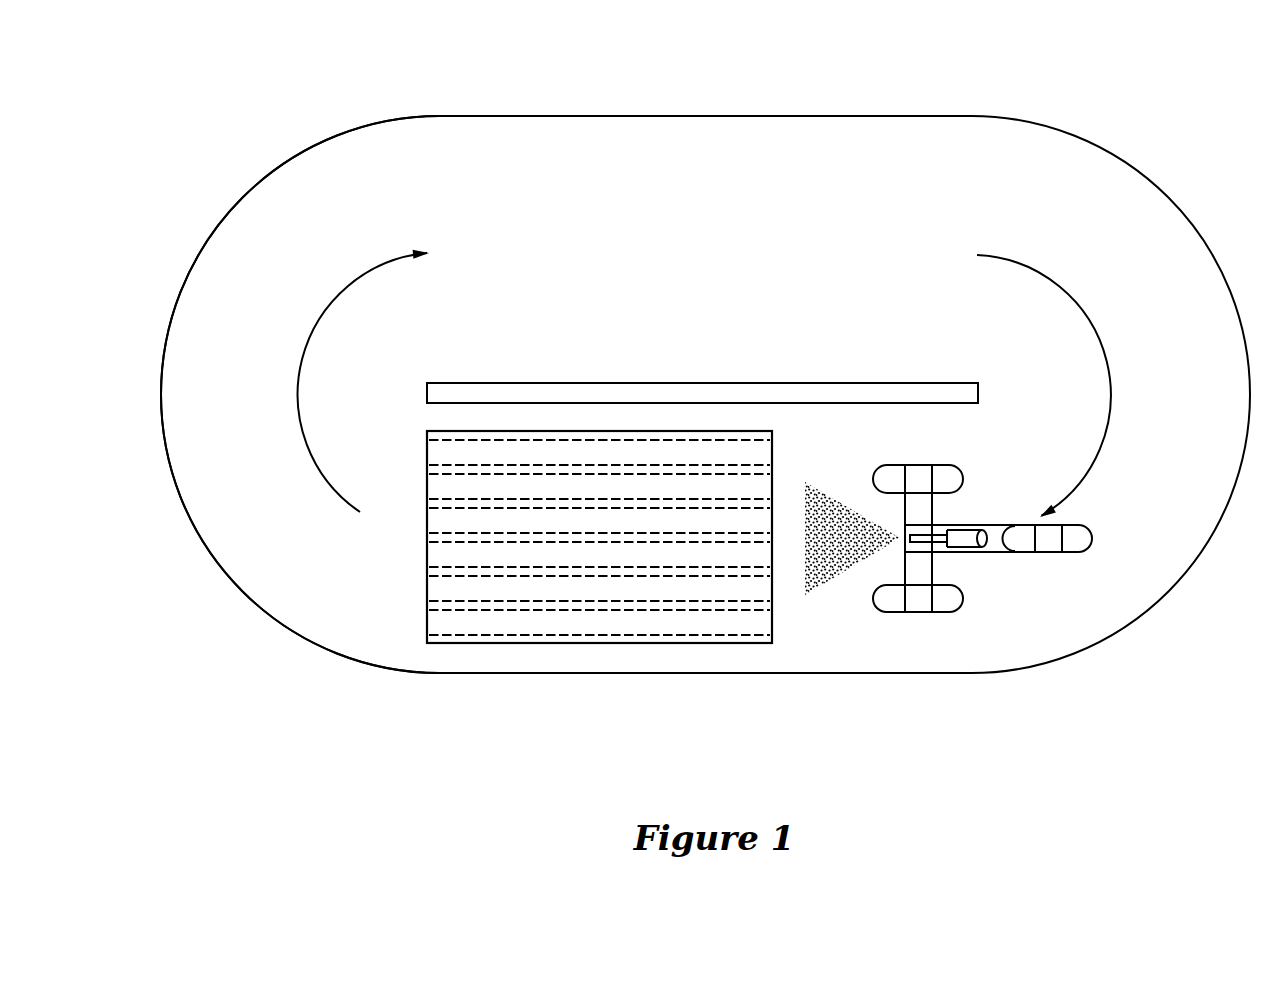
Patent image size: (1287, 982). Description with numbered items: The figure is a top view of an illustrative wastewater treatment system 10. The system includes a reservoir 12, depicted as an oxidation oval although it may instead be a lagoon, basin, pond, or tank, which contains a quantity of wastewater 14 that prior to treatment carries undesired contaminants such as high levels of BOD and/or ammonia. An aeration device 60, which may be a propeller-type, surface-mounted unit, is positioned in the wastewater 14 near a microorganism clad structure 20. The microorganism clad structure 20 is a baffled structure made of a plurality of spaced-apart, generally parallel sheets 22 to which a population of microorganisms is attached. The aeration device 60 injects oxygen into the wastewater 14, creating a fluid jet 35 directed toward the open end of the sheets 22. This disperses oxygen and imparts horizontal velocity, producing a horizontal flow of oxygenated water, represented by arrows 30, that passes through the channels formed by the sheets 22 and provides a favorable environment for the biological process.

The wastewater treatment system 10 is at (698, 388).
The reservoir 12 is at (1177, 590).
The wastewater 14 is at (207, 279).
The microorganism clad structure 20 is at (599, 582).
The sheets 22 is at (652, 575).
The arrows 30 is at (310, 465).
The fluid jet 35 is at (853, 573).
The aeration device 60 is at (1026, 599).